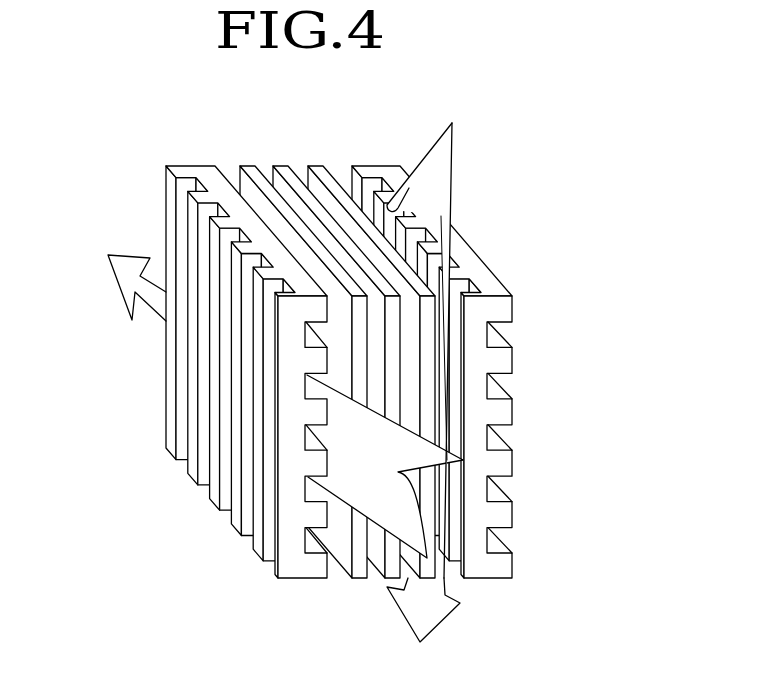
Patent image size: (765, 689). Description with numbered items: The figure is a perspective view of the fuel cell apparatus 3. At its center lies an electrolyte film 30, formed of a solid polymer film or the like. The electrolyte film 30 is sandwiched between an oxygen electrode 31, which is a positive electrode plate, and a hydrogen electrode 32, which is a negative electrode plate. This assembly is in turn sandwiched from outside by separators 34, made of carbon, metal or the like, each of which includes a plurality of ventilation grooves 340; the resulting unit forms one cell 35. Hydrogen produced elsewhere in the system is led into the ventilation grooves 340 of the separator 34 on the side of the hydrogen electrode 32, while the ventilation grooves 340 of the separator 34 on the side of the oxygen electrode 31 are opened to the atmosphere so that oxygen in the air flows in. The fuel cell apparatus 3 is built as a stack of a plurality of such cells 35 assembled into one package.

The fuel cell apparatus 3 is at (360, 379).
The electrolyte film 30 is at (294, 182).
The oxygen electrode 31 is at (337, 192).
The hydrogen electrode 32 is at (250, 176).
The separator 34 is at (300, 578).
The ventilation groove 340 is at (458, 279).
The cell 35 is at (515, 263).